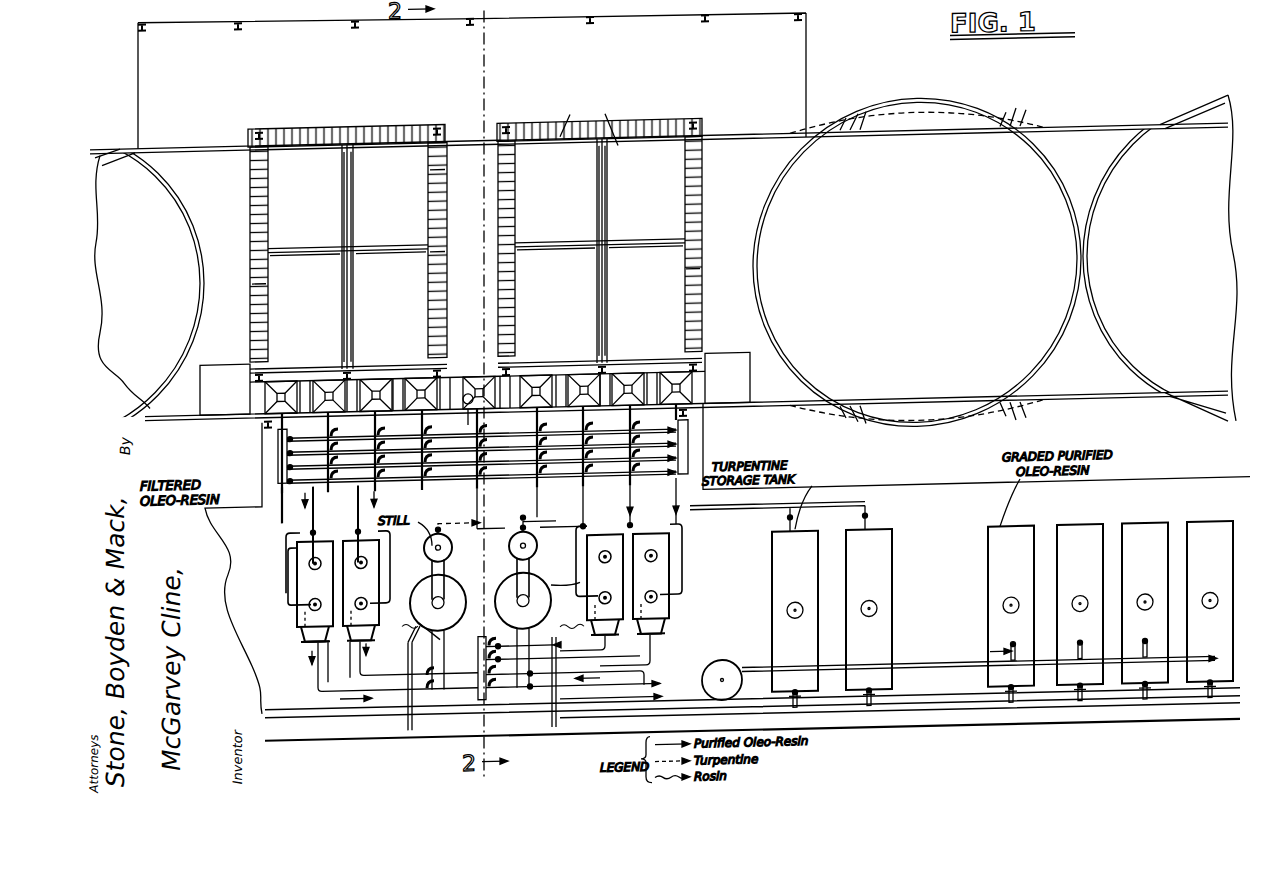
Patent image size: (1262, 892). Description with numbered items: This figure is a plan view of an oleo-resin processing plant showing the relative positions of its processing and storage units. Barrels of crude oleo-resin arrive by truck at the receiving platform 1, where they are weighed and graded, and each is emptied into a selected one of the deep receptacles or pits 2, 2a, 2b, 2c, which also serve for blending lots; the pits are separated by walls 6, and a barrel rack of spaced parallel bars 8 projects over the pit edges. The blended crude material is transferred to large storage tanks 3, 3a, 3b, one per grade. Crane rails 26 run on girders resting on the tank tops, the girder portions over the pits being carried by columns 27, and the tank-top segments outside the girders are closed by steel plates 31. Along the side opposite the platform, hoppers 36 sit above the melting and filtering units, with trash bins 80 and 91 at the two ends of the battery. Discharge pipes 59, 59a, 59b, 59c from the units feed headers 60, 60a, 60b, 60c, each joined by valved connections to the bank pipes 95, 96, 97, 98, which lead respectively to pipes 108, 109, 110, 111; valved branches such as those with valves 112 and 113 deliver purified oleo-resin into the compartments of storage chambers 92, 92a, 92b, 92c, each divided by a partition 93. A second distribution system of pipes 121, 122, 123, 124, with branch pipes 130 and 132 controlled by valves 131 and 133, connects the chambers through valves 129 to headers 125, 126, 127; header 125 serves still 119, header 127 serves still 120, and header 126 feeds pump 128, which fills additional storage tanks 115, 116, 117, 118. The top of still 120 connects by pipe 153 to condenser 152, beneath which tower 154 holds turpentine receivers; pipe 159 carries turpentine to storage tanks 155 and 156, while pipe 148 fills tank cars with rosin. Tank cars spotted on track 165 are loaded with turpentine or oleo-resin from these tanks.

The receiving platform 1 is at (812, 64).
The receptacle or pit 2 is at (258, 188).
The receptacle or pit 2a is at (712, 288).
The receptacle or pit 2b is at (438, 196).
The receptacle or pit 2c is at (440, 272).
The storage tank 3 is at (1048, 230).
The storage tank 3a is at (1135, 368).
The storage tank 3b is at (180, 262).
The partition 6 is at (342, 304).
The bars 8 is at (270, 346).
The crane rails 26 is at (1093, 152).
The columns 27 is at (256, 142).
The steel plates 31 is at (948, 136).
The hoppers 36 is at (430, 400).
The discharge pipe 59 is at (539, 434).
The discharge pipe 59a is at (585, 434).
The discharge pipe 59b is at (632, 434).
The discharge pipe 59c is at (690, 452).
The header 60 is at (530, 499).
The header 60a is at (581, 503).
The header 60b is at (631, 502).
The header 60c is at (681, 501).
The trash bin 80 is at (740, 378).
The trash bin 91 is at (222, 378).
The storage chamber 92 is at (297, 572).
The storage chamber 92a is at (378, 574).
The storage chamber 92b is at (587, 578).
The storage chamber 92c is at (670, 580).
The partition 93 is at (300, 596).
The pipe 95 is at (477, 480).
The pipe 96 is at (440, 480).
The pipe 97 is at (486, 440).
The pipe 98 is at (468, 410).
The pipe 108 is at (333, 523).
The pipe 109 is at (386, 523).
The pipe 110 is at (569, 555).
The pipe 111 is at (677, 554).
The valve 112 is at (304, 540).
The valve 113 is at (318, 560).
The storage tank 115 is at (1000, 610).
The storage tank 116 is at (1060, 560).
The storage tank 117 is at (1140, 558).
The storage tank 118 is at (1200, 562).
The still 119 is at (462, 600).
The still 120 is at (512, 600).
The pipe 121 is at (330, 702).
The pipe 122 is at (419, 657).
The pipe 123 is at (605, 641).
The pipe 124 is at (609, 673).
The header 125 is at (438, 712).
The header 126 is at (498, 712).
The header 127 is at (580, 712).
The pump 128 is at (720, 690).
The valve 129 is at (429, 642).
The branch pipe 130 is at (300, 662).
The valve 131 is at (300, 648).
The branch pipe 132 is at (347, 663).
The valve 133 is at (355, 650).
The pipe 148 is at (611, 685).
The condenser 152 is at (522, 546).
The pipe 153 is at (571, 589).
The tower 154 is at (499, 505).
The turpentine storage tank 155 is at (774, 611).
The turpentine storage tank 156 is at (882, 582).
The pipe 159 is at (770, 530).
The track 165 is at (1160, 750).